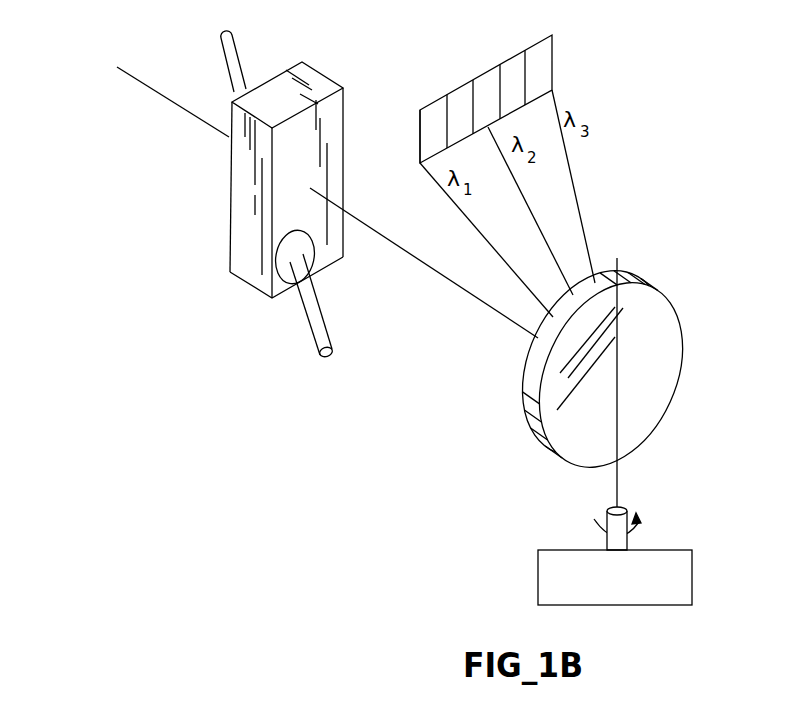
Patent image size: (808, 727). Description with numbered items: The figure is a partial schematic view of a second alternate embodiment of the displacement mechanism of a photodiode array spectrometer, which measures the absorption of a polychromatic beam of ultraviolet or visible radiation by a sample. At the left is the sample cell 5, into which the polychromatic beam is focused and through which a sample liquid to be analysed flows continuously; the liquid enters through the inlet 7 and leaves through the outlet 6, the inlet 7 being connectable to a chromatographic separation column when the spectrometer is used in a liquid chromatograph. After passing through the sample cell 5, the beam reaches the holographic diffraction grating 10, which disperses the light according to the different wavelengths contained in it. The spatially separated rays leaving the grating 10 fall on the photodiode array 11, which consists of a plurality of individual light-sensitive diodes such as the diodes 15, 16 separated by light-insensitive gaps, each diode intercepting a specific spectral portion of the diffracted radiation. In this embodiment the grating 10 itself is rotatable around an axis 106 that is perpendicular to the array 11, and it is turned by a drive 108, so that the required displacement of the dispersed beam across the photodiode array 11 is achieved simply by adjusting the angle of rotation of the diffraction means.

The sample cell 5 is at (240, 190).
The outlet 6 is at (219, 43).
The inlet 7 is at (315, 358).
The holographic diffraction grating 10 is at (528, 417).
The photodiode array 11 is at (498, 99).
The light-sensitive diode 15 is at (432, 132).
The light-sensitive diode 16 is at (457, 102).
The axis 106 is at (618, 260).
The drive 108 is at (692, 578).